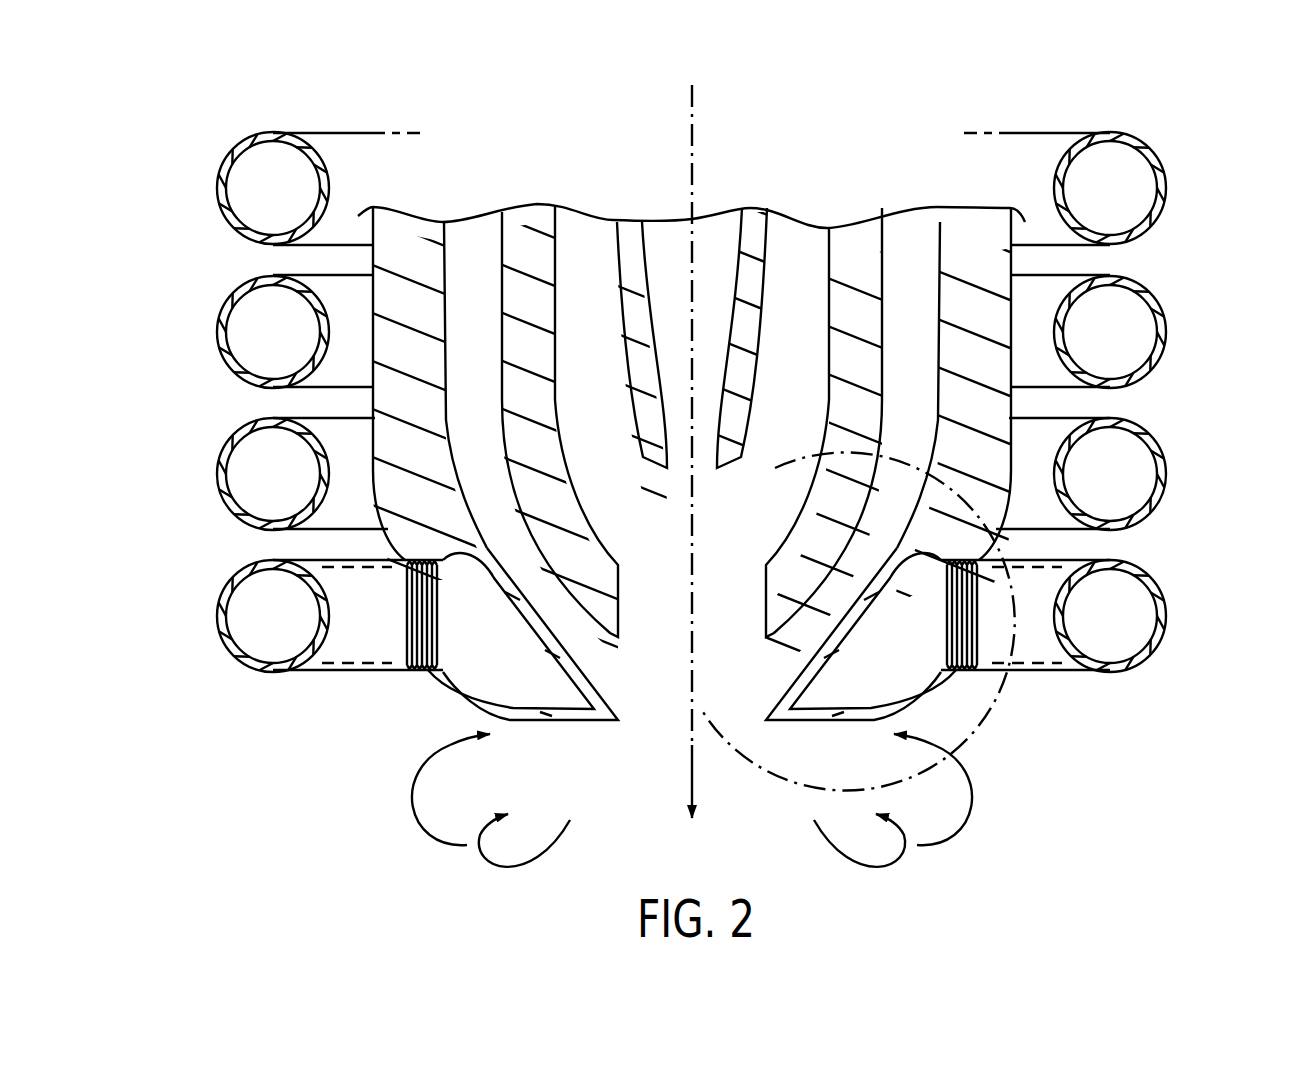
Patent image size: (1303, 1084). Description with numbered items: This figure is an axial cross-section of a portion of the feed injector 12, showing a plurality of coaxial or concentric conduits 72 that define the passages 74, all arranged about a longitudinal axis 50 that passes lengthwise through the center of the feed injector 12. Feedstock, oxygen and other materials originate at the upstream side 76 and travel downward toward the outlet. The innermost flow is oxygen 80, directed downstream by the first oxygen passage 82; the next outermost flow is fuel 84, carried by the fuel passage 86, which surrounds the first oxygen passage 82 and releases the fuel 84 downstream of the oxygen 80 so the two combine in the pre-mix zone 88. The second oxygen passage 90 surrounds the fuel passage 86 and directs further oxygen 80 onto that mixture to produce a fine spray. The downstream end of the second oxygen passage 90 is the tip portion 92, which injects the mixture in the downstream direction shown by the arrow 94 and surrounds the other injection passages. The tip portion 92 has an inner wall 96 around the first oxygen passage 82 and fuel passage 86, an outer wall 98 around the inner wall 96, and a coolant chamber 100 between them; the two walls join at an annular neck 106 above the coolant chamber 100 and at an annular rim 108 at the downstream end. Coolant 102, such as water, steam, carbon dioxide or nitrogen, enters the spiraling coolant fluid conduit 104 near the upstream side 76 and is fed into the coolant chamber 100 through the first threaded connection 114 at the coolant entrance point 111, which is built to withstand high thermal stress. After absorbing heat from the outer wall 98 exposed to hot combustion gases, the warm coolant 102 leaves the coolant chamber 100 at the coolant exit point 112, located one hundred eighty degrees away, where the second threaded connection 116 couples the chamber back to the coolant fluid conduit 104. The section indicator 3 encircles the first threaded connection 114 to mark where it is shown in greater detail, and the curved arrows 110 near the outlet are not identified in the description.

The feed injector 12 is at (916, 99).
The longitudinal axis 50 is at (694, 143).
The conduits 72 is at (506, 127).
The passages 74 is at (473, 240).
The upstream side 76 is at (643, 116).
The oxygen 80 is at (713, 240).
The first oxygen passage 82 is at (630, 227).
The fuel 84 is at (797, 257).
The fuel passage 86 is at (533, 217).
The pre-mix zone 88 is at (660, 548).
The second oxygen passage 90 is at (410, 238).
The tip portion 92 is at (822, 728).
The arrow 94 is at (690, 795).
The inner wall 96 is at (855, 600).
The outer wall 98 is at (940, 673).
The coolant chamber 100 is at (903, 650).
The coolant 102 is at (1124, 168).
The coolant fluid conduit 104 is at (1167, 180).
The neck 106 is at (1006, 540).
The rim 108 is at (763, 676).
The recirculating flow 110 is at (430, 847).
The coolant entrance point 111 is at (977, 618).
The coolant exit point 112 is at (415, 627).
The first threaded connection 114 is at (980, 570).
The second threaded connection 116 is at (430, 672).
The section line 3- 3 is at (794, 461).